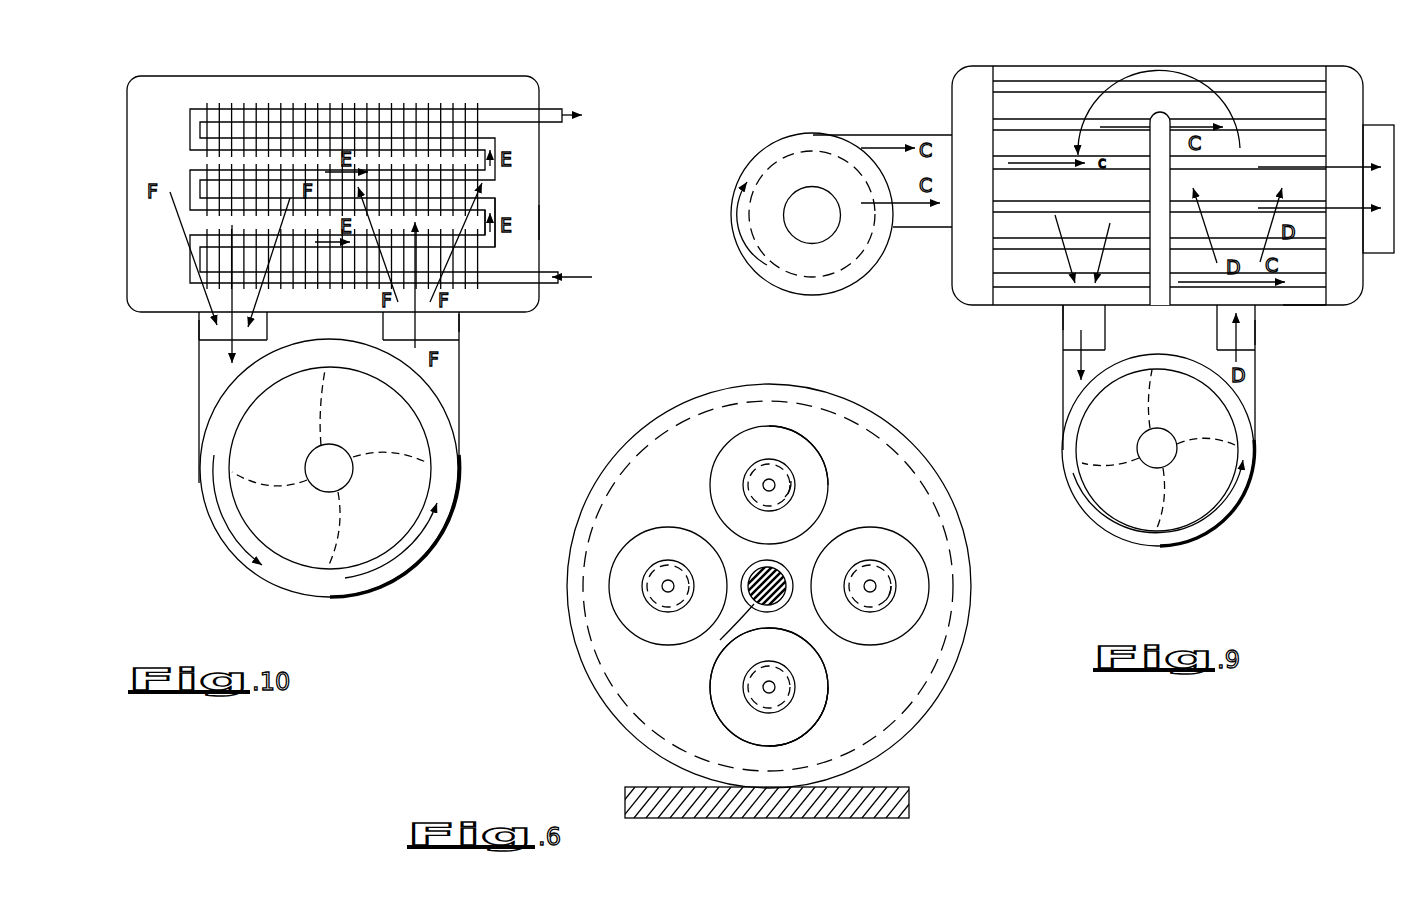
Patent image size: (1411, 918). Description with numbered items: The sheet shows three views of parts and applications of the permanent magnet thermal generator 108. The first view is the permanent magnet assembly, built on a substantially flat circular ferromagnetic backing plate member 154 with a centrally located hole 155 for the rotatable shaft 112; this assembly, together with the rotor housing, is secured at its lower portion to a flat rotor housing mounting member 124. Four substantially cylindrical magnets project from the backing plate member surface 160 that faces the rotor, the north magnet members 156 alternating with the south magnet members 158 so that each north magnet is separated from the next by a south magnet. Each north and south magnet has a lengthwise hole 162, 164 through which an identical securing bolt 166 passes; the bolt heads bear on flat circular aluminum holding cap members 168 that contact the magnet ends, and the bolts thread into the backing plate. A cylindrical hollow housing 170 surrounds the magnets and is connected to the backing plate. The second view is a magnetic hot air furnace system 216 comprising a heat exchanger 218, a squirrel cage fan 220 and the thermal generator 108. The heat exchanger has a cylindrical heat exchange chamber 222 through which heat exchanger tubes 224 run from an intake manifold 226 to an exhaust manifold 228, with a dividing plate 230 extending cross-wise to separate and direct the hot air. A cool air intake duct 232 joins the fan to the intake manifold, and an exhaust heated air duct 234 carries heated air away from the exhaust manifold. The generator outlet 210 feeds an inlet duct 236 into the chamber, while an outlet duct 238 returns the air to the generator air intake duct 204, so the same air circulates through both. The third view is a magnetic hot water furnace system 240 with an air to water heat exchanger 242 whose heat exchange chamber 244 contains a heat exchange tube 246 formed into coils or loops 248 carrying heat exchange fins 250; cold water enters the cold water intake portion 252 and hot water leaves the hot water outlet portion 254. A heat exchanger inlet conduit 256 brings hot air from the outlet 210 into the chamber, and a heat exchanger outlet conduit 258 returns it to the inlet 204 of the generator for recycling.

In FIG. 10, the permanent magnet thermal generator 108 is at (460, 480).
In FIG. 9, the permanent magnet thermal generator 108 is at (1222, 520).
In FIG. 6, the rotatable shaft 112 is at (791, 569).
In FIG. 6, the rotor housing mounting member 124 is at (768, 818).
In FIG. 6, the backing plate member 154 is at (920, 657).
In FIG. 6, the centrally located hole 155 is at (754, 604).
In FIG. 6, the north permanent magnet member 156 is at (788, 444).
In FIG. 6, the south permanent magnet member 158 is at (917, 577).
In FIG. 6, the backing plate member surface 160 is at (872, 704).
In FIG. 6, the hole 162 is at (791, 481).
In FIG. 6, the hole 164 is at (882, 595).
In FIG. 6, the securing bolt 166 is at (769, 481).
In FIG. 6, the holding cap member 168 is at (791, 481).
In FIG. 6, the hollow housing 170 is at (854, 401).
In FIG. 10, the air intake duct 204 is at (253, 336).
In FIG. 9, the air intake duct 204 is at (1101, 340).
In FIG. 10, the outlet 210 is at (461, 336).
In FIG. 9, the outlet 210 is at (1247, 350).
In FIG. 9, the magnetic hot air furnace system 216 is at (1149, 189).
In FIG. 9, the heat exchanger 218 is at (1284, 314).
In FIG. 9, the squirrel cage fan 220 is at (756, 153).
In FIG. 9, the heat exchange chamber 222 is at (1097, 64).
In FIG. 9, the heat exchanger tube 224 is at (1255, 93).
In FIG. 9, the intake manifold 226 is at (972, 84).
In FIG. 9, the exhaust manifold 228 is at (1349, 89).
In FIG. 9, the dividing plate 230 is at (1150, 190).
In FIG. 9, the cool air intake duct 232 is at (918, 217).
In FIG. 9, the exhaust heated air duct 234 is at (1379, 244).
In FIG. 9, the inlet duct 236 is at (1254, 342).
In FIG. 9, the outlet duct 238 is at (1068, 317).
In FIG. 10, the magnetic hot water furnace system 240 is at (374, 178).
In FIG. 10, the air to water heat exchanger 242 is at (378, 70).
In FIG. 10, the heat exchange chamber 244 is at (540, 225).
In FIG. 10, the heat exchange tube 246 is at (496, 238).
In FIG. 10, the coils or loops 248 is at (495, 178).
In FIG. 10, the heat exchange fins 250 is at (486, 126).
In FIG. 10, the cold water intake portion 252 is at (548, 285).
In FIG. 10, the hot water outlet portion 254 is at (545, 105).
In FIG. 10, the heat exchanger inlet conduit 256 is at (464, 321).
In FIG. 10, the heat exchanger outlet conduit 258 is at (204, 330).